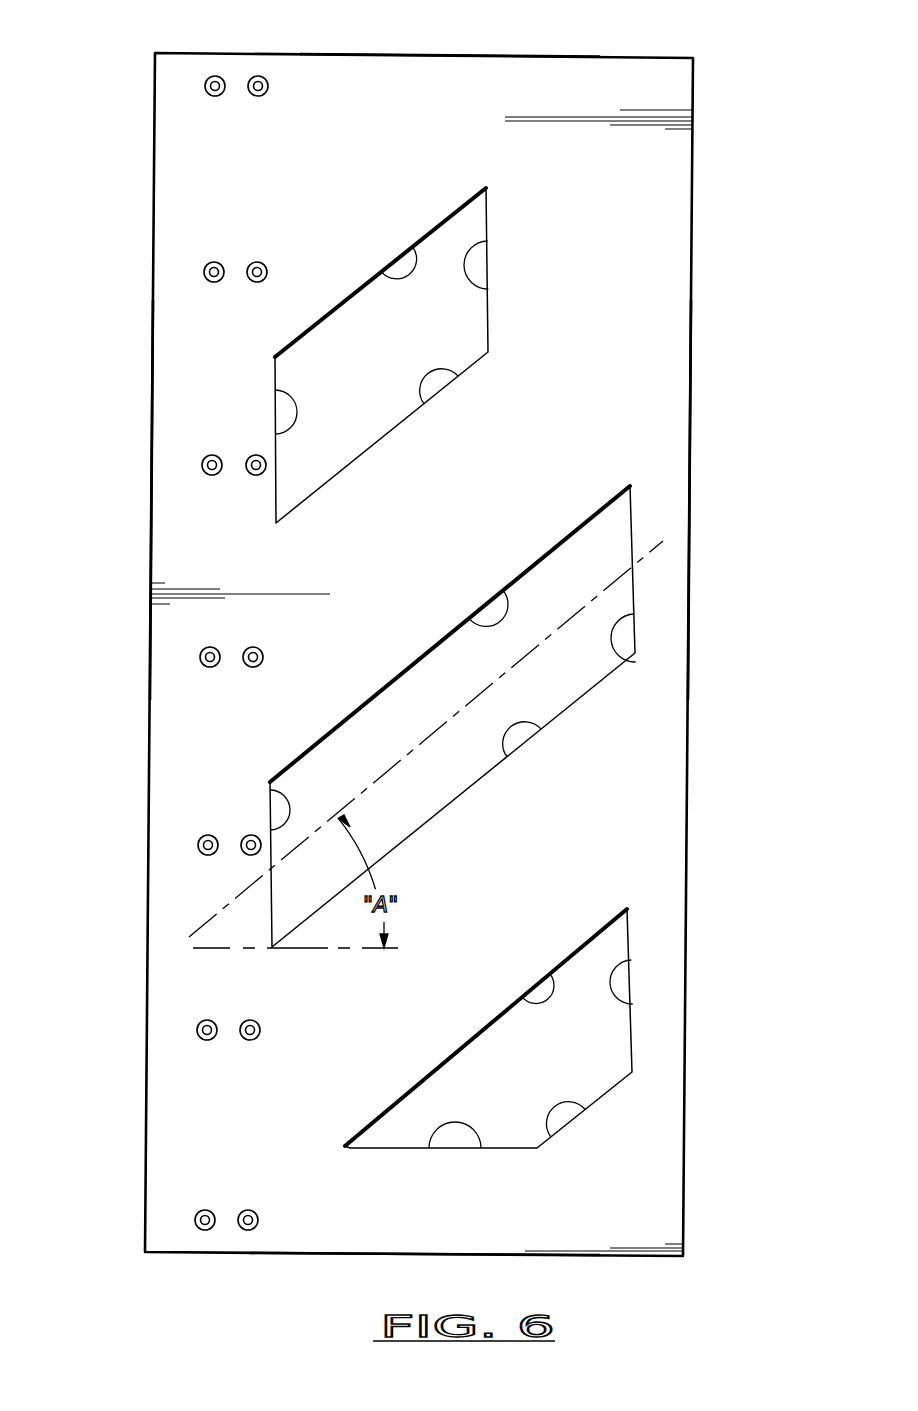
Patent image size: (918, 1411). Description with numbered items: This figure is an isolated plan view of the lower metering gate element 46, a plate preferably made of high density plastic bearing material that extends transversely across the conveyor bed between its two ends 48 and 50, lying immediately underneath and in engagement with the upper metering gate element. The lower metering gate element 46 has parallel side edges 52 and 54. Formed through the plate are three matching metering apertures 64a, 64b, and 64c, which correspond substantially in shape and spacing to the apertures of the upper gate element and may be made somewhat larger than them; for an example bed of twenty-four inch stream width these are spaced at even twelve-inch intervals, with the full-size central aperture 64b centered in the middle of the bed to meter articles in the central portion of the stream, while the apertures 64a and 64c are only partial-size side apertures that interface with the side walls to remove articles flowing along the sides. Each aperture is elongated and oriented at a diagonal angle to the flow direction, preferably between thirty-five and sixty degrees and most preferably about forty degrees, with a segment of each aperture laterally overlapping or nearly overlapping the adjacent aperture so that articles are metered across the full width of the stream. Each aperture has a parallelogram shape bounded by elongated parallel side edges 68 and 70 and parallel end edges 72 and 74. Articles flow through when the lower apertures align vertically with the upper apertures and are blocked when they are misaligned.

The lower metering gate element 46 is at (728, 172).
The end 48 is at (440, 52).
The end 50 is at (343, 1218).
The side edge 52 is at (151, 758).
The side edge 54 is at (690, 488).
The metering aperture 64a is at (398, 368).
The metering aperture 64b is at (466, 737).
The metering aperture 64c is at (525, 1090).
The side edge 68 is at (413, 270).
The side edge 70 is at (455, 375).
The end edge 72 is at (283, 395).
The end edge 74 is at (490, 283).